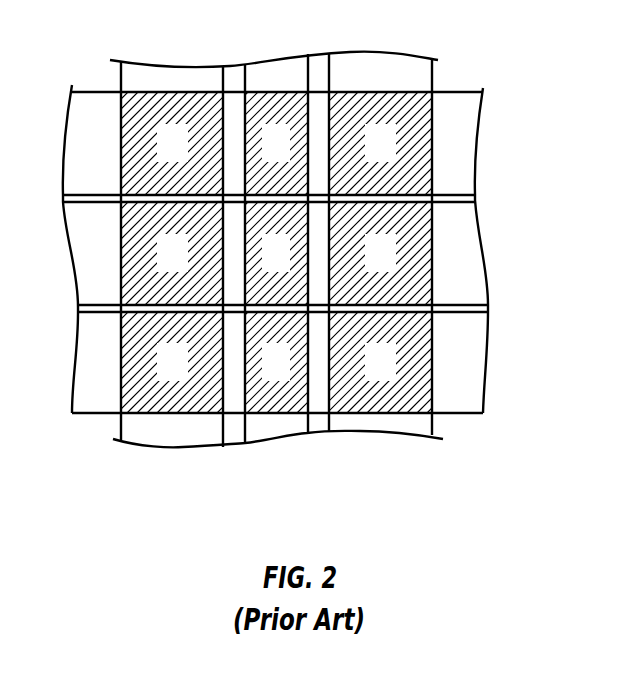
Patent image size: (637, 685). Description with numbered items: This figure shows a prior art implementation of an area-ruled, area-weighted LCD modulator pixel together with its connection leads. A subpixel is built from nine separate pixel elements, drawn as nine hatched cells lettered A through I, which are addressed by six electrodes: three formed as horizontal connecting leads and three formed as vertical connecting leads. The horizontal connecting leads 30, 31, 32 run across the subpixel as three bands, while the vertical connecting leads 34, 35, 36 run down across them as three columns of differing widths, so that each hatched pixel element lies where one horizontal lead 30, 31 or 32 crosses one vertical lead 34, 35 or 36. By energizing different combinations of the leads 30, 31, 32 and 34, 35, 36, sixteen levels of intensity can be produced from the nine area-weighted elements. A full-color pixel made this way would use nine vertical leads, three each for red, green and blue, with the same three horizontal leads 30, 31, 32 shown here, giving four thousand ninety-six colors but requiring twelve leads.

The first row / word line 30 is at (462, 142).
The second row / word line 31 is at (462, 253).
The third row / word line 32 is at (477, 328).
The first column / bit line 34 is at (168, 75).
The second column / bit line 35 is at (262, 77).
The third column / bit line 36 is at (353, 77).